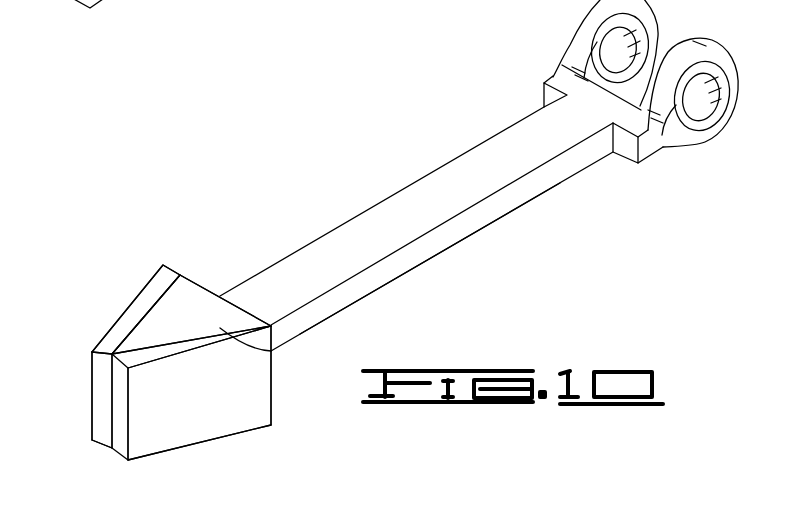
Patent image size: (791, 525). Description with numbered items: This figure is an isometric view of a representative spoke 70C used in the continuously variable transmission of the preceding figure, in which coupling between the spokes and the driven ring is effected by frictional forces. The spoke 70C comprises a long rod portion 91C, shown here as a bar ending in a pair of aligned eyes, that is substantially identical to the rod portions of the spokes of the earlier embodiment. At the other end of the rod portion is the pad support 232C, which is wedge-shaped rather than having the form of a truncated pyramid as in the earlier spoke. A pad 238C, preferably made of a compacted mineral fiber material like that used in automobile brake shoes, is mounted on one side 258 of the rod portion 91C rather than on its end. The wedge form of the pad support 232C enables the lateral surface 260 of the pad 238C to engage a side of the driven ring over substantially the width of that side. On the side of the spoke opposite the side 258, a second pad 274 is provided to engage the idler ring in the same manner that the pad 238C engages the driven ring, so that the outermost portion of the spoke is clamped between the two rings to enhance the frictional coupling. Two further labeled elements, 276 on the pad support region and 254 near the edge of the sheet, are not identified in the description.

The arm 254 is at (103, 3).
The spoke 70C is at (413, 196).
The rod portion 91C is at (452, 233).
The pad 238C is at (174, 437).
The lateral surface 260 is at (213, 405).
The pad support 232C is at (190, 300).
The bevelled edge 276 is at (166, 285).
The second pad 274 is at (108, 333).
The side 258 is at (283, 352).